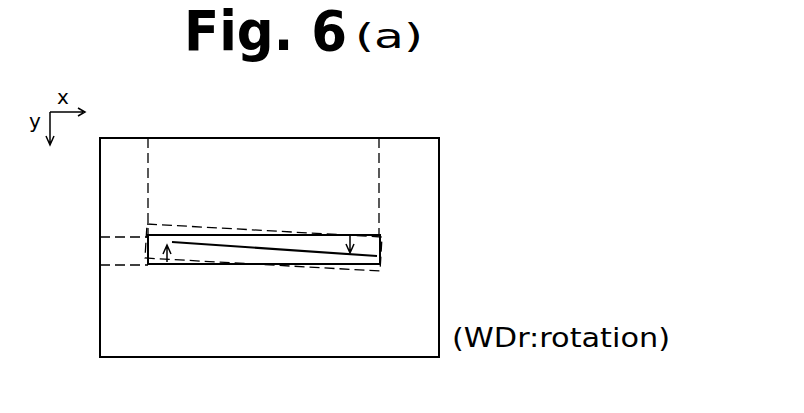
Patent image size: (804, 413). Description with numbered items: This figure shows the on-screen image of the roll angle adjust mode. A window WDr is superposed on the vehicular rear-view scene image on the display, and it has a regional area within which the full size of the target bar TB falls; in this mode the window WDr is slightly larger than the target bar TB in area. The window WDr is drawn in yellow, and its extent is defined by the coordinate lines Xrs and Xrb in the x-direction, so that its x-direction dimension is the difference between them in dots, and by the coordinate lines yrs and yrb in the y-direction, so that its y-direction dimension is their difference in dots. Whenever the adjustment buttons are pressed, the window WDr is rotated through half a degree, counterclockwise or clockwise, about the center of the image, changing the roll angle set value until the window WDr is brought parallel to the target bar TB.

The window WDr is at (370, 230).
The target bar TB is at (338, 253).
The x-direction start coordinate Xrs is at (155, 173).
The x-direction end coordinate Xrb is at (394, 172).
The y-direction start coordinate yrs is at (96, 237).
The y-direction end coordinate yrb is at (96, 265).